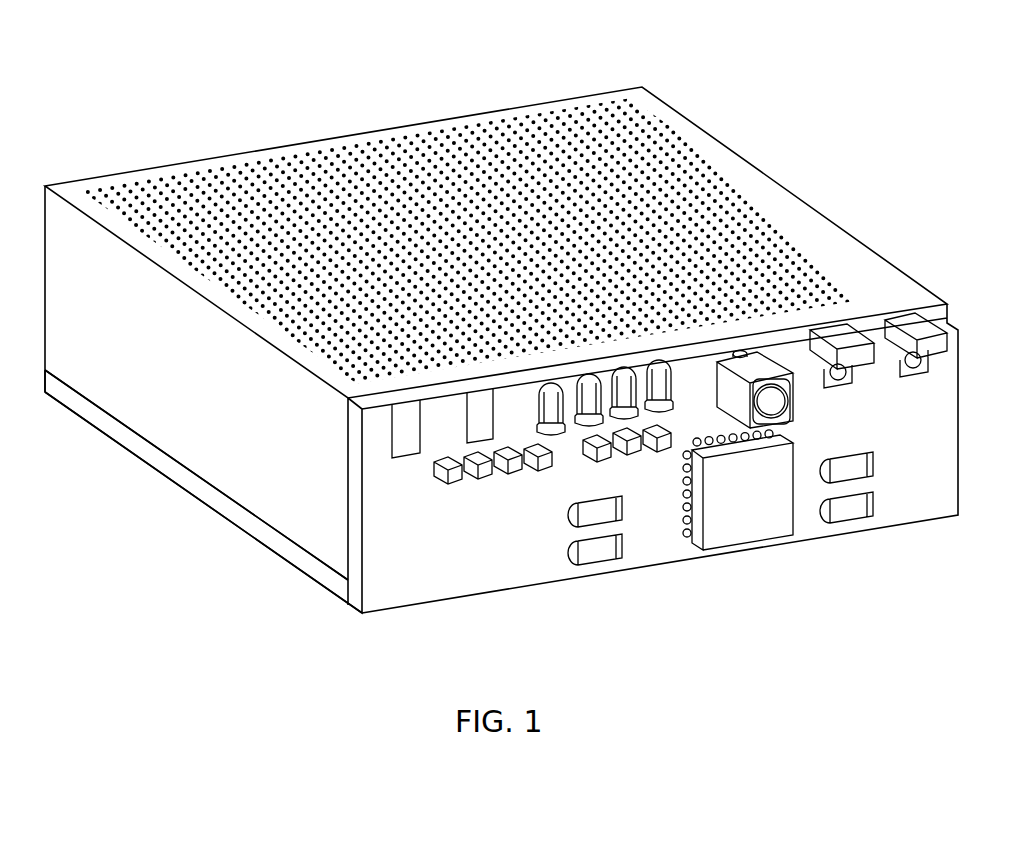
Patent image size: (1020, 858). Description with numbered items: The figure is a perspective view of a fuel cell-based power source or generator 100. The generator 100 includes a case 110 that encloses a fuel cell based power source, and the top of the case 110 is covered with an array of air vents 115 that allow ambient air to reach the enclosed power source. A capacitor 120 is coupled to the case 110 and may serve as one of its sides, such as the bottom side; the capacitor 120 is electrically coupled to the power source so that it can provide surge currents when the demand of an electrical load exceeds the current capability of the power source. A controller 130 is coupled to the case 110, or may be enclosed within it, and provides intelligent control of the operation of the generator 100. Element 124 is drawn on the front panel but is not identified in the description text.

The fuel cell-based power generator 100 is at (797, 58).
The case 110 is at (787, 203).
The air vents 115 is at (683, 141).
The capacitor 120 is at (192, 483).
The camera module 124 is at (795, 398).
The controller 130 is at (755, 522).